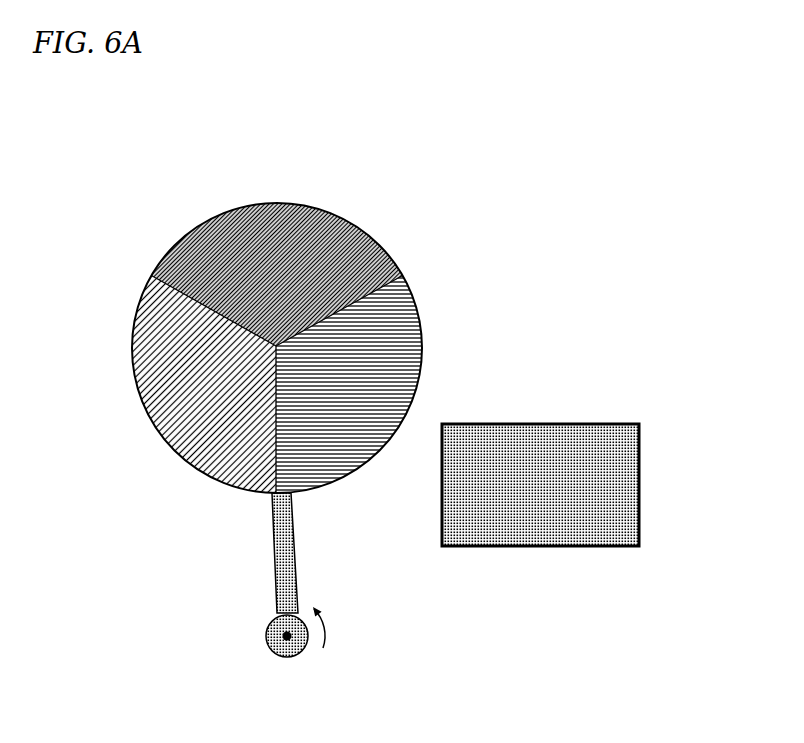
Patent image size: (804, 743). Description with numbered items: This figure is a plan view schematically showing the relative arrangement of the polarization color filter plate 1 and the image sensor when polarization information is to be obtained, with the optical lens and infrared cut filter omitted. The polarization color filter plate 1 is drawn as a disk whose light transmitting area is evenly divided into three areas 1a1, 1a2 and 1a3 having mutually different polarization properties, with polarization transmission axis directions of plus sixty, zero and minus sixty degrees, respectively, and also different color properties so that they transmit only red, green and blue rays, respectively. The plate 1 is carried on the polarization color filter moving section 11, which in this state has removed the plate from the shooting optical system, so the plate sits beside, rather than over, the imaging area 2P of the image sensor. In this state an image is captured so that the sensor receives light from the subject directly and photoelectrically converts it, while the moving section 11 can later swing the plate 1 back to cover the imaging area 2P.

The polarization color filter plate 1 is at (257, 336).
The first area of the polarization color filter plate 1a1 is at (160, 413).
The second area of the polarization color filter plate 1a2 is at (357, 440).
The third area of the polarization color filter plate 1a3 is at (360, 225).
The polarization color filter moving section 11 is at (270, 641).
The imaging area 2P is at (585, 547).